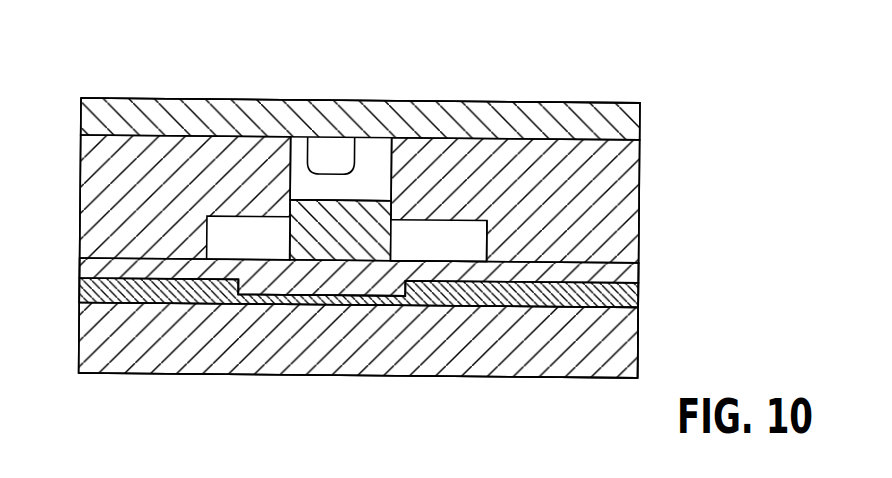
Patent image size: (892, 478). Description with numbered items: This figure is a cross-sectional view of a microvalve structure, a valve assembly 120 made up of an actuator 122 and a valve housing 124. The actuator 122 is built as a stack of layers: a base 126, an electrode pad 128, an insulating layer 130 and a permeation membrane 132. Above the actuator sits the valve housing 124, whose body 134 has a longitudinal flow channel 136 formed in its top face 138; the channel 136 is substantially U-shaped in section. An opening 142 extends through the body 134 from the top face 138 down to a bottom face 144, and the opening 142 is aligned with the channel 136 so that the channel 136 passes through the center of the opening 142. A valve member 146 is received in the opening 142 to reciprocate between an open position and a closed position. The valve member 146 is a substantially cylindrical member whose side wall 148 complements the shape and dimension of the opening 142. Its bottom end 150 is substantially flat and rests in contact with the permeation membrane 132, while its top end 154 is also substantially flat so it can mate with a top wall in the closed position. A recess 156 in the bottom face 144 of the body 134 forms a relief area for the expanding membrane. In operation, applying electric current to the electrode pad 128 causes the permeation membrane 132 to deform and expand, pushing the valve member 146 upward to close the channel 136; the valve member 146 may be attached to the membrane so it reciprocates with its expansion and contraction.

The valve assembly 120 is at (680, 60).
The actuator 122 is at (651, 309).
The valve housing 124 is at (620, 96).
The base 126 is at (628, 363).
The electrode pad 128 is at (244, 296).
The insulating layer 130 is at (641, 297).
The permeation membrane 132 is at (633, 272).
The body 134 is at (629, 193).
The longitudinal flow channel 136 is at (337, 147).
The top face 138 is at (641, 138).
The opening 142 is at (382, 145).
The bottom face 144 is at (82, 266).
The valve member 146 is at (283, 242).
The side wall 148 is at (396, 231).
The bottom end 150 is at (320, 259).
The top end 154 is at (320, 199).
The recess 156 is at (487, 253).